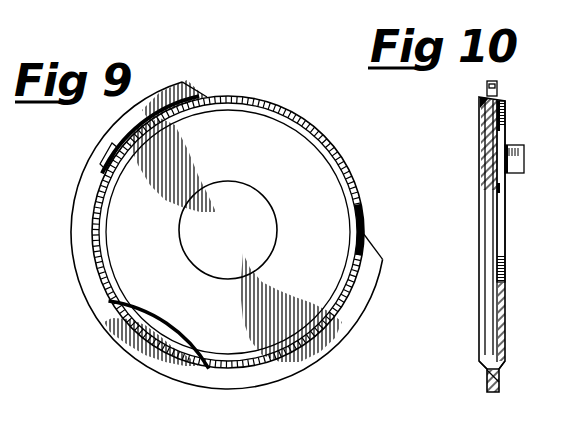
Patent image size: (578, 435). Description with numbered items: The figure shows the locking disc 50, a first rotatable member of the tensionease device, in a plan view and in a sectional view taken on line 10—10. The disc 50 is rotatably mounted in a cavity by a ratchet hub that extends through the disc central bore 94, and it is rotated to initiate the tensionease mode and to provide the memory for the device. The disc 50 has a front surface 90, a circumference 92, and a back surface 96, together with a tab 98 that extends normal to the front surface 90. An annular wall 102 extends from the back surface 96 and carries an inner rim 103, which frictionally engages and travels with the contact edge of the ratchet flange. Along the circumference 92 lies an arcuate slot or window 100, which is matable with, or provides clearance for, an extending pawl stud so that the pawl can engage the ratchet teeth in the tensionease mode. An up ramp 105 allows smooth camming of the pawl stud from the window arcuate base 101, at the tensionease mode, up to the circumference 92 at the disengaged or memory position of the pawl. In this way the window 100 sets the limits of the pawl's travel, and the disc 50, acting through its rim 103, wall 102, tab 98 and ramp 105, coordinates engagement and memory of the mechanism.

In FIG. 9, the section line 10 is at (235, 33).
In FIG. 9, the locking disc 50 is at (372, 119).
In FIG. 10, the locking disc 50 is at (550, 105).
In FIG. 10, the front surface 90 is at (506, 331).
In FIG. 9, the circumference 92 is at (368, 308).
In FIG. 10, the circumference 92 is at (497, 392).
In FIG. 9, the disc central bore 94 is at (237, 225).
In FIG. 10, the disc central bore 94 is at (503, 245).
In FIG. 9, the back surface 96 is at (86, 184).
In FIG. 10, the back surface 96 is at (487, 83).
In FIG. 10, the tab 98 is at (517, 148).
In FIG. 9, the arcuate slot or window 100 is at (292, 84).
In FIG. 9, the window arcuate base 101 is at (350, 173).
In FIG. 10, the annular wall 102 is at (483, 366).
In FIG. 10, the inner rim 103 is at (481, 114).
In FIG. 9, the up ramp 105 is at (378, 243).